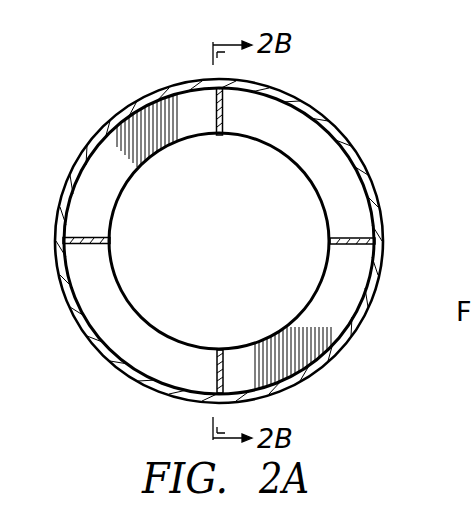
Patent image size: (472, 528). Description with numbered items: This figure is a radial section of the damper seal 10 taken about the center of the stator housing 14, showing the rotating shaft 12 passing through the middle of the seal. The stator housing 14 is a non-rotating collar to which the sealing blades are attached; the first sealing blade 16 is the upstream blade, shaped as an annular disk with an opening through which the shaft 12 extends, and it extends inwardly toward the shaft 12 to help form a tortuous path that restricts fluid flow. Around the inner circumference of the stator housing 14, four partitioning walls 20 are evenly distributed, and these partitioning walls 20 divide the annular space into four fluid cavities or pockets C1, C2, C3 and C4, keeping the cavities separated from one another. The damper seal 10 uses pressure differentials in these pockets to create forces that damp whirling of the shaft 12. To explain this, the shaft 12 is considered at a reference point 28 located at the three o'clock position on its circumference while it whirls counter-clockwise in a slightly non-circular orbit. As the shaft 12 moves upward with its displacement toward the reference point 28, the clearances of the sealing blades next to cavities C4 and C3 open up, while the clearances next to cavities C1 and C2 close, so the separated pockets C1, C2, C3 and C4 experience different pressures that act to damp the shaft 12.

The damper seal 10 is at (245, 227).
The shaft 12 is at (237, 250).
The stator housing 14 is at (302, 101).
The first sealing blade 16 is at (347, 185).
The partitioning walls 20 is at (222, 112).
The reference point 28 is at (331, 245).
The fluid cavity C1 is at (140, 139).
The fluid cavity C2 is at (328, 162).
The fluid cavity C3 is at (303, 340).
The fluid cavity C4 is at (128, 335).